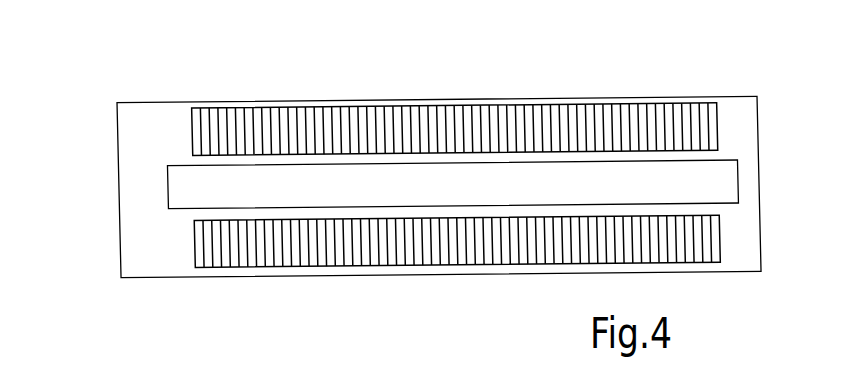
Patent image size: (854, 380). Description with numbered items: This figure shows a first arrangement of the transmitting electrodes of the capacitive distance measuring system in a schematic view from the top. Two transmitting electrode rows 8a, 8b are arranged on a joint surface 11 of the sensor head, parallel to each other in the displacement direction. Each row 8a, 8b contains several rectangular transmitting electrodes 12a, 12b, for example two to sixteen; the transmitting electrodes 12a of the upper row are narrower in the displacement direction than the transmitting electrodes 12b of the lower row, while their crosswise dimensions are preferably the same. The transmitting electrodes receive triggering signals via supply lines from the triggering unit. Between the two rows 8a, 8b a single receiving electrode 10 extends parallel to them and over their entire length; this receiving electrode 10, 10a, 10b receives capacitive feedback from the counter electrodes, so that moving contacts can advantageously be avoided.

The transmitting electrode row 8a is at (394, 81).
The transmitting electrode row 8b is at (394, 283).
The receiving electrode 10 is at (452, 184).
The receiving electrode 10a is at (452, 184).
The receiving electrode 10b is at (452, 184).
The joint surface 11 is at (150, 258).
The transmitting electrodes 12a is at (457, 120).
The transmitting electrodes 12b is at (423, 258).